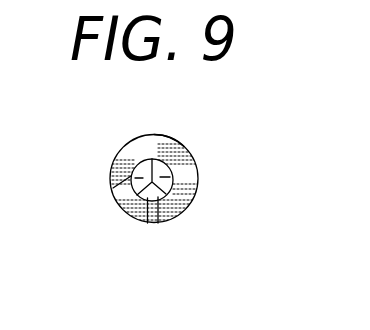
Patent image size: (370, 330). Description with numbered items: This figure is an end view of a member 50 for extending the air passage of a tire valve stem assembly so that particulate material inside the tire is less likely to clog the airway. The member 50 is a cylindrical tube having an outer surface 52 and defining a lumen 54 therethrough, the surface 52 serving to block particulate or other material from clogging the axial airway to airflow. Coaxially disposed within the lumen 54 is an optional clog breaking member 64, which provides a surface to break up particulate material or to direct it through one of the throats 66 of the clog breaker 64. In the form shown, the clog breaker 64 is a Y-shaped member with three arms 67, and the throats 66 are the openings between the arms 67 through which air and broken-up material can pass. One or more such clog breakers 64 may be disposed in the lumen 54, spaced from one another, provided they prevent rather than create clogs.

The member 50 is at (100, 121).
The outer surface 52 is at (159, 135).
The lumen 54 is at (173, 178).
The throat 66 is at (113, 188).
The three arms 67 is at (148, 223).
The clog breaking member 64 is at (158, 223).